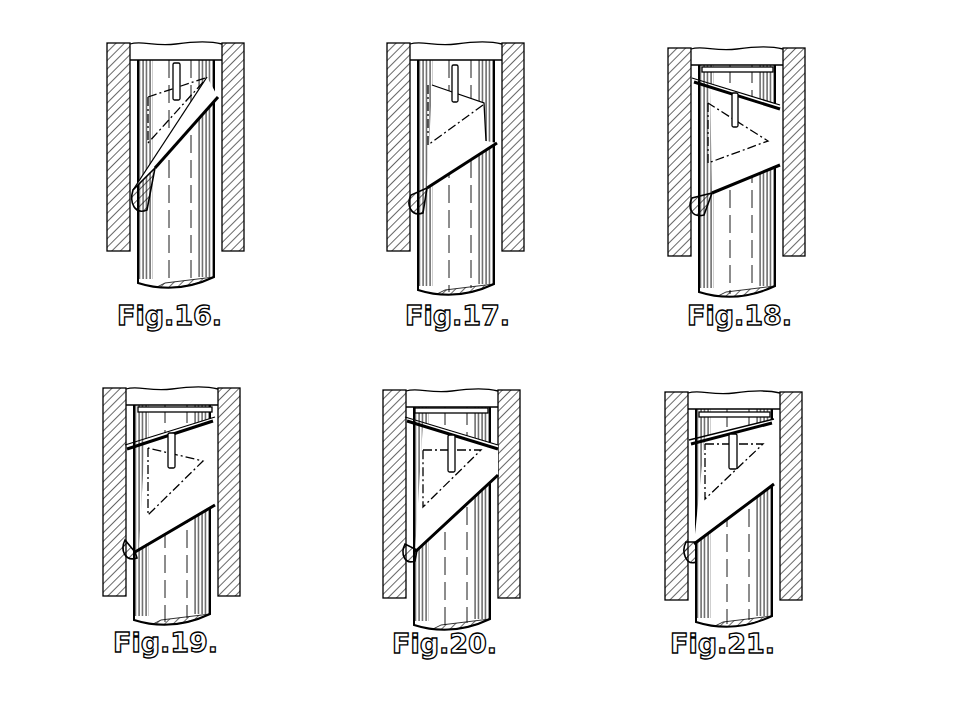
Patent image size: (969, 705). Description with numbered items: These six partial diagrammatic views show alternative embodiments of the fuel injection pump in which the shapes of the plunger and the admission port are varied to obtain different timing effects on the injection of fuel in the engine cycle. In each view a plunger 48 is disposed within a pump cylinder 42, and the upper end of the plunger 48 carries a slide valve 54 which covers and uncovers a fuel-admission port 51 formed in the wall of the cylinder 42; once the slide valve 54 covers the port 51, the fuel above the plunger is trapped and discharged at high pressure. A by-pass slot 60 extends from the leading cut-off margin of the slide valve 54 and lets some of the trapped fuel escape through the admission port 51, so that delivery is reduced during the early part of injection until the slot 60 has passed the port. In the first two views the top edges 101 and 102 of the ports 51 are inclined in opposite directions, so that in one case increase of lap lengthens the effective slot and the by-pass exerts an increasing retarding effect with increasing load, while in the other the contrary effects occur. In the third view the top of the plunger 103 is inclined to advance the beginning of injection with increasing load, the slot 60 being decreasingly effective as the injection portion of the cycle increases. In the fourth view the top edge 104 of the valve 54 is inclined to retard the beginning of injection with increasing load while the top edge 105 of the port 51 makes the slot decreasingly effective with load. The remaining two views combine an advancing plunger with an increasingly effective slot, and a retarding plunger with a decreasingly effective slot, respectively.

In FIG. 16, the pump cylinder 42 is at (138, 146).
In FIG. 17, the pump cylinder 42 is at (428, 146).
In FIG. 18, the pump cylinder 42 is at (703, 156).
In FIG. 19, the pump cylinder 42 is at (132, 491).
In FIG. 20, the pump cylinder 42 is at (423, 493).
In FIG. 21, the pump cylinder 42 is at (707, 496).
In FIG. 16, the plunger 48 is at (216, 174).
In FIG. 17, the plunger 48 is at (502, 177).
In FIG. 18, the plunger 48 is at (779, 181).
In FIG. 19, the plunger 48 is at (205, 515).
In FIG. 20, the plunger 48 is at (485, 518).
In FIG. 21, the plunger 48 is at (776, 518).
In FIG. 16, the fuel-admission port 51 is at (41, 79).
In FIG. 17, the fuel-admission port 51 is at (411, 115).
In FIG. 18, the fuel-admission port 51 is at (700, 133).
In FIG. 19, the fuel-admission port 51 is at (127, 481).
In FIG. 20, the fuel-admission port 51 is at (407, 478).
In FIG. 21, the fuel-admission port 51 is at (695, 471).
In FIG. 16, the slide valve 54 is at (214, 144).
In FIG. 17, the slide valve 54 is at (489, 149).
In FIG. 18, the slide valve 54 is at (768, 147).
In FIG. 19, the slide valve 54 is at (205, 488).
In FIG. 20, the slide valve 54 is at (485, 489).
In FIG. 21, the slide valve 54 is at (763, 491).
In FIG. 16, the by-pass slot 60 is at (117, 81).
In FIG. 17, the by-pass slot 60 is at (511, 78).
In FIG. 18, the by-pass slot 60 is at (679, 108).
In FIG. 19, the by-pass slot 60 is at (222, 450).
In FIG. 20, the by-pass slot 60 is at (505, 450).
In FIG. 21, the by-pass slot 60 is at (782, 445).
In FIG. 16, the top edge of the port 101 is at (210, 46).
In FIG. 17, the top edge of the port 102 is at (461, 46).
In FIG. 18, the top of the plunger 103 is at (802, 78).
In FIG. 19, the top edge of the valve 104 is at (197, 383).
In FIG. 19, the top edge of the port 105 is at (245, 481).